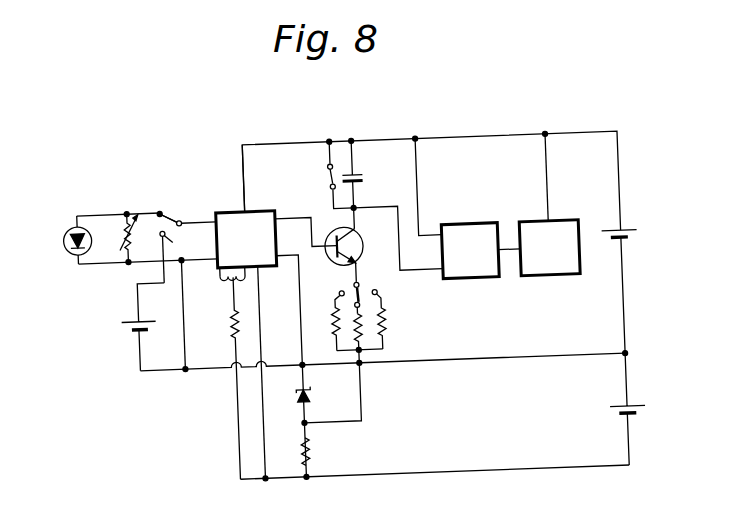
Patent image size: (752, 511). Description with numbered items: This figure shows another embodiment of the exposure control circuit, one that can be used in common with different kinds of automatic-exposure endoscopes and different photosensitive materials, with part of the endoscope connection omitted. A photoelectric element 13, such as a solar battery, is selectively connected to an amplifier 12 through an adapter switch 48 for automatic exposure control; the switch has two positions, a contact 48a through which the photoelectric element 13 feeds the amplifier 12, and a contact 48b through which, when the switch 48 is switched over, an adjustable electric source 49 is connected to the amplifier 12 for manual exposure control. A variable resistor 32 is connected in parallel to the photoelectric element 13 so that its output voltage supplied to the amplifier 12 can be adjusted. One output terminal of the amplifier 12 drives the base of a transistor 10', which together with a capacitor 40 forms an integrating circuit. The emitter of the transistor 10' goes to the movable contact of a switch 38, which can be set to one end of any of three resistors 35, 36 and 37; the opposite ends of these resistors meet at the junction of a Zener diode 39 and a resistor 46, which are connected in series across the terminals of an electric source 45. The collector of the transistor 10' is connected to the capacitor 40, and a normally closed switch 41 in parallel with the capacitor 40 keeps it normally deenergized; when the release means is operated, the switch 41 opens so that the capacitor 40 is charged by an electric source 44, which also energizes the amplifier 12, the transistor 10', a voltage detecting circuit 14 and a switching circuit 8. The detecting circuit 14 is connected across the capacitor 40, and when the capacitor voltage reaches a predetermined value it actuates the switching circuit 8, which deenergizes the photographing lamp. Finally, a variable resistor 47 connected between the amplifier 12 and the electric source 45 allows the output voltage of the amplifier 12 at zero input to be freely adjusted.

The switching circuit 8 is at (548, 204).
The transistor 10' is at (367, 245).
The amplifier 12 is at (245, 213).
The photoelectric element 13 is at (81, 216).
The voltage detecting circuit 14 is at (470, 251).
The variable resistor 32 is at (124, 235).
The resistor 35 is at (332, 318).
The resistor 36 is at (364, 327).
The resistor 37 is at (383, 322).
The switch 38 is at (362, 283).
The Zener diode 39 is at (309, 390).
The capacitor 40 is at (371, 177).
The normally closed switch 41 is at (329, 181).
The electric source 44 is at (634, 245).
The electric source 45 is at (637, 419).
The resistor 46 is at (302, 449).
The variable resistor 47 is at (226, 276).
The switch 48 is at (176, 206).
The switch contact 48a is at (163, 204).
The switch contact 48b is at (194, 255).
The adjustable electric source 49 is at (133, 321).